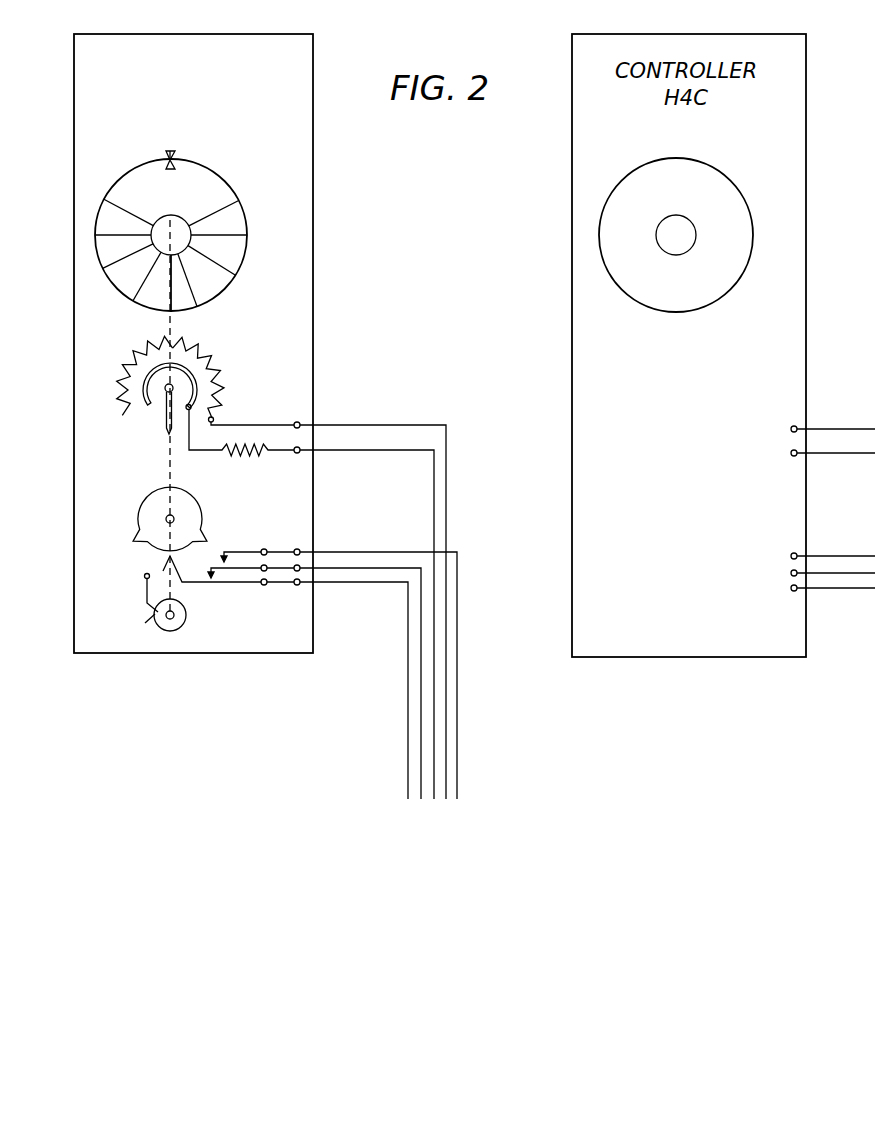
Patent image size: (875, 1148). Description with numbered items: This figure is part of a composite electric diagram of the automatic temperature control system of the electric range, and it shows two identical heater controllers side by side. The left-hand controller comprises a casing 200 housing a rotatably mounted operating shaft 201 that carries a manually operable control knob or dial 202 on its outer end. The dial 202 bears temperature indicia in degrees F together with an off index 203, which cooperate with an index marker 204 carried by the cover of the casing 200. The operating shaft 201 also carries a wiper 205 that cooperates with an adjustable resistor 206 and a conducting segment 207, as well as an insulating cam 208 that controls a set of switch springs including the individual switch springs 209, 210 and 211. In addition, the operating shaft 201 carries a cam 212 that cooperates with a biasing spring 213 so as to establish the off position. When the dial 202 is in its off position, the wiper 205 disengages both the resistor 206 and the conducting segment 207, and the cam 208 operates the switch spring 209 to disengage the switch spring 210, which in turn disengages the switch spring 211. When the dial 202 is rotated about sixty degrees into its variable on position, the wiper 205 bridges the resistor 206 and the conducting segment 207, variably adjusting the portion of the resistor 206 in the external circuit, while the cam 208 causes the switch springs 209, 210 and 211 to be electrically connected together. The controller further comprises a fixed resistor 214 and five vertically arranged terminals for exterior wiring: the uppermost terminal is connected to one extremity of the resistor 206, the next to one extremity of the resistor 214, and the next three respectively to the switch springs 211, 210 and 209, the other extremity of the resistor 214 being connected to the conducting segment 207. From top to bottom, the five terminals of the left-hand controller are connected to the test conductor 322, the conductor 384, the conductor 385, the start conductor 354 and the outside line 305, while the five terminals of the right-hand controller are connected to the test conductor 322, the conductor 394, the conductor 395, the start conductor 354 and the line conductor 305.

The casing 200 is at (305, 137).
The operating shaft 201 is at (180, 333).
The control knob or dial 202 is at (221, 190).
The off index 203 is at (176, 165).
The index marker 204 is at (166, 154).
The wiper 205 is at (166, 430).
The adjustable resistor 206 is at (232, 349).
The conducting segment 207 is at (134, 365).
The insulating cam 208 is at (152, 509).
The switch spring 209 is at (222, 584).
The switch spring 210 is at (261, 568).
The switch spring 211 is at (261, 551).
The cam 212 is at (180, 623).
The biasing spring 213 is at (147, 604).
The fixed resistor 214 is at (256, 458).
The test conductor 322 is at (368, 425).
The conductor 384 is at (368, 451).
The conductor 385 is at (363, 553).
The start conductor 354 is at (361, 569).
The outside line 305 is at (360, 583).
The conductor 394 is at (858, 453).
The conductor 395 is at (858, 556).